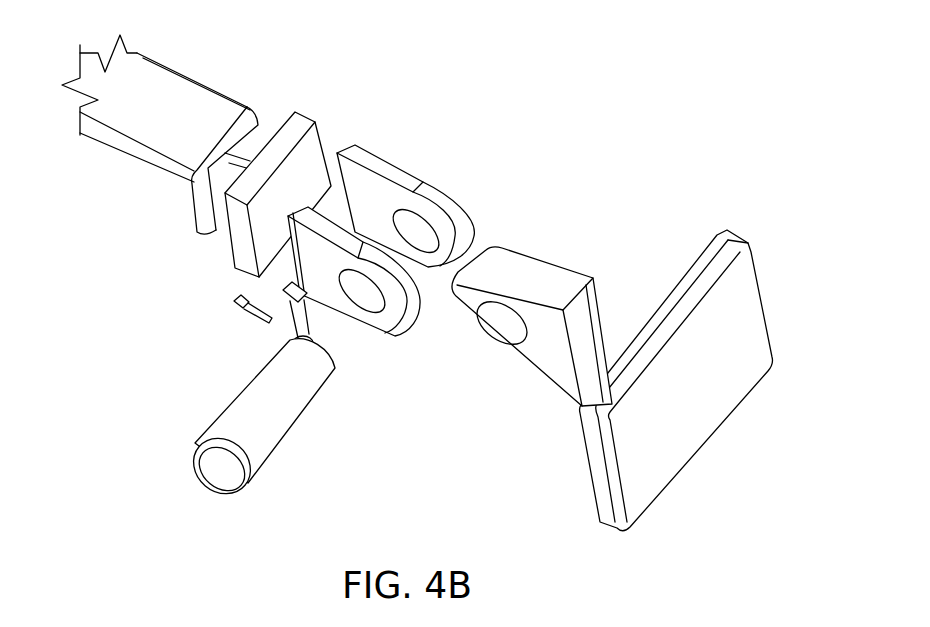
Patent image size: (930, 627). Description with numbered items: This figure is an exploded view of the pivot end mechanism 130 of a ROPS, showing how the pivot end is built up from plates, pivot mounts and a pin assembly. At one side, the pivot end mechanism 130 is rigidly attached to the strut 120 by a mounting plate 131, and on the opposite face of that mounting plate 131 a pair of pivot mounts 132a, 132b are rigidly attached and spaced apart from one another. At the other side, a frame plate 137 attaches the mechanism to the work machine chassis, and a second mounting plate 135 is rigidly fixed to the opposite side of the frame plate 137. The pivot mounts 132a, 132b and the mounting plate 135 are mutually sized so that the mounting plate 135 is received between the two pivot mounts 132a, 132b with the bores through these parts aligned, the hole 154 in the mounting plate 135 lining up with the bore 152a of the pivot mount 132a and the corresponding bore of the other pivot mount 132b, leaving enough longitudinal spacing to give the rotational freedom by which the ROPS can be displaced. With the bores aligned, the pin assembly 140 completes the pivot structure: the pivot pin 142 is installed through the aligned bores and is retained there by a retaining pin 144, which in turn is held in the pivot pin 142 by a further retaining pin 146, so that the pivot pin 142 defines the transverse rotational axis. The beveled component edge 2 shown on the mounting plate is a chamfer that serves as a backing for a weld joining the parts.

The component edge 2 is at (585, 370).
The strut 120 is at (197, 80).
The pivot end mechanism 130 is at (459, 275).
The mounting plate 131 is at (307, 114).
The pivot mount 132a is at (276, 311).
The pivot mount 132b is at (437, 143).
The mounting plate 135 is at (522, 331).
The frame plate 137 is at (737, 234).
The pin assembly 140 is at (210, 406).
The pivot pin 142 is at (232, 415).
The retaining pin 144 is at (286, 288).
The retaining pin 146 is at (236, 302).
The bore of first knuckle lug 152a is at (362, 292).
The bore of knuckle block 154 is at (503, 322).